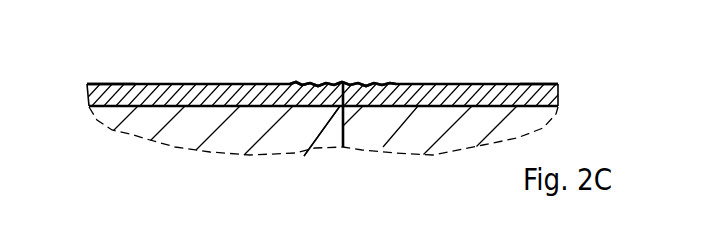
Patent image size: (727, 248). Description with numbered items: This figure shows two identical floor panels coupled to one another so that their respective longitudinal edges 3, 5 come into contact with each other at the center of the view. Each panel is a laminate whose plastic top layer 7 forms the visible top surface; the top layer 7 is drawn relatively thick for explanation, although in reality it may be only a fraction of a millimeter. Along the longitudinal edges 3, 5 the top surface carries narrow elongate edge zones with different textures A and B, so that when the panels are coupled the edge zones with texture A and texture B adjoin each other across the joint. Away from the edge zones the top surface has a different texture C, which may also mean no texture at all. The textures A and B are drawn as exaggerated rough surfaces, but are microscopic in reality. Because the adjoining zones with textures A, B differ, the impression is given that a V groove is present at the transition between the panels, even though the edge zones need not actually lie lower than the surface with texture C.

The top layer 7 is at (199, 85).
The longitudinal edge 3 is at (345, 115).
The longitudinal edge 5 is at (347, 116).
The texture A is at (378, 85).
The texture B is at (297, 85).
The texture C is at (139, 85).